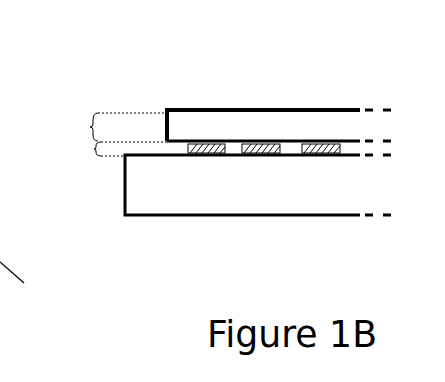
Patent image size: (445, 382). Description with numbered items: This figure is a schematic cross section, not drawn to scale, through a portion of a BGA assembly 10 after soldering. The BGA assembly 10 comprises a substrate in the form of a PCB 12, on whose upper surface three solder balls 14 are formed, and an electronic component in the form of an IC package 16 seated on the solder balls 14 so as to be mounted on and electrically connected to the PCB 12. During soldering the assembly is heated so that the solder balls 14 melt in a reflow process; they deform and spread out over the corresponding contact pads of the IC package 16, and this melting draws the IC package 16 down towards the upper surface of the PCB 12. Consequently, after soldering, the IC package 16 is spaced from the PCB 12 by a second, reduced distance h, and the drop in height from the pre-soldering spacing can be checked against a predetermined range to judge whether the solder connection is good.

The BGA assembly 10 is at (198, 163).
The PCB 12 is at (347, 193).
The solder balls 14 is at (320, 155).
The IC package 16 is at (260, 128).